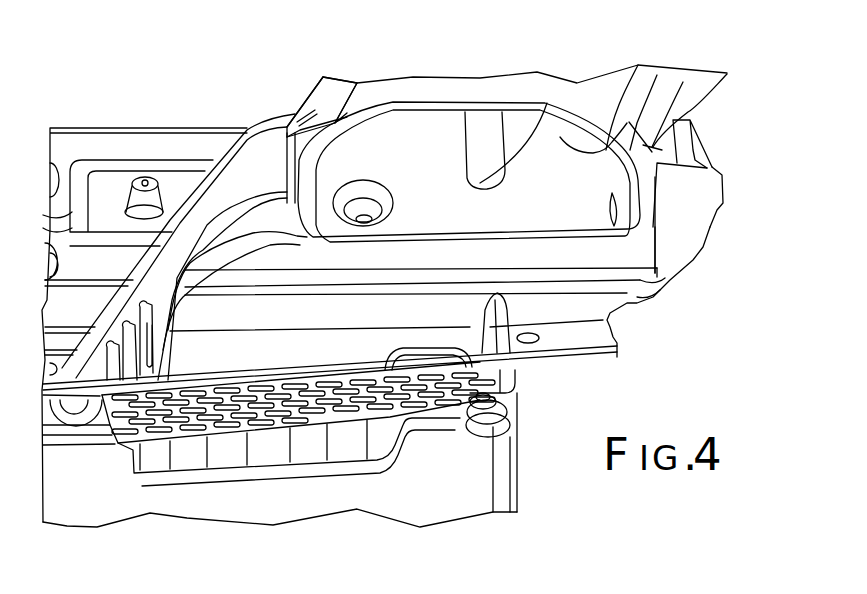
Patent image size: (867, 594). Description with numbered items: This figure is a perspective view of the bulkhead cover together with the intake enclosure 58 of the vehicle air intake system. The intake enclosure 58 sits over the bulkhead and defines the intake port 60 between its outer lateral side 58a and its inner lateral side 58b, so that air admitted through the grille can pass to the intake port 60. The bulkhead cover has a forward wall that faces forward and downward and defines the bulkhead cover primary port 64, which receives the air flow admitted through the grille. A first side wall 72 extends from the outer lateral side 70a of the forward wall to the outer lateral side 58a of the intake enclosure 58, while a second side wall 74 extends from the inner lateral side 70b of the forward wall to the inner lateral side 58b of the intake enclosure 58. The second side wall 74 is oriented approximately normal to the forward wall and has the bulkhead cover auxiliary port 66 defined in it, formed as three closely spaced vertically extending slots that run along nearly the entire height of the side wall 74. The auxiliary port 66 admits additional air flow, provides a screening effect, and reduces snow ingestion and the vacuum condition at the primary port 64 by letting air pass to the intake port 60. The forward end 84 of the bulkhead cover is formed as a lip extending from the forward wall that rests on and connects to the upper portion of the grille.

The intake enclosure 58 is at (507, 130).
The outer lateral side of the intake enclosure 58a is at (637, 145).
The inner lateral side of the intake enclosure 58b is at (330, 100).
The intake port 60 is at (453, 117).
The bulkhead cover primary port 64 is at (249, 424).
The bulkhead cover auxiliary port 66 is at (138, 353).
The outer lateral side of the forward wall 70a is at (510, 373).
The inner lateral side of the forward wall 70b is at (118, 443).
The first side wall 72 is at (673, 277).
The second side wall 74 is at (160, 292).
The forward end of the bulkhead cover 84 is at (572, 360).